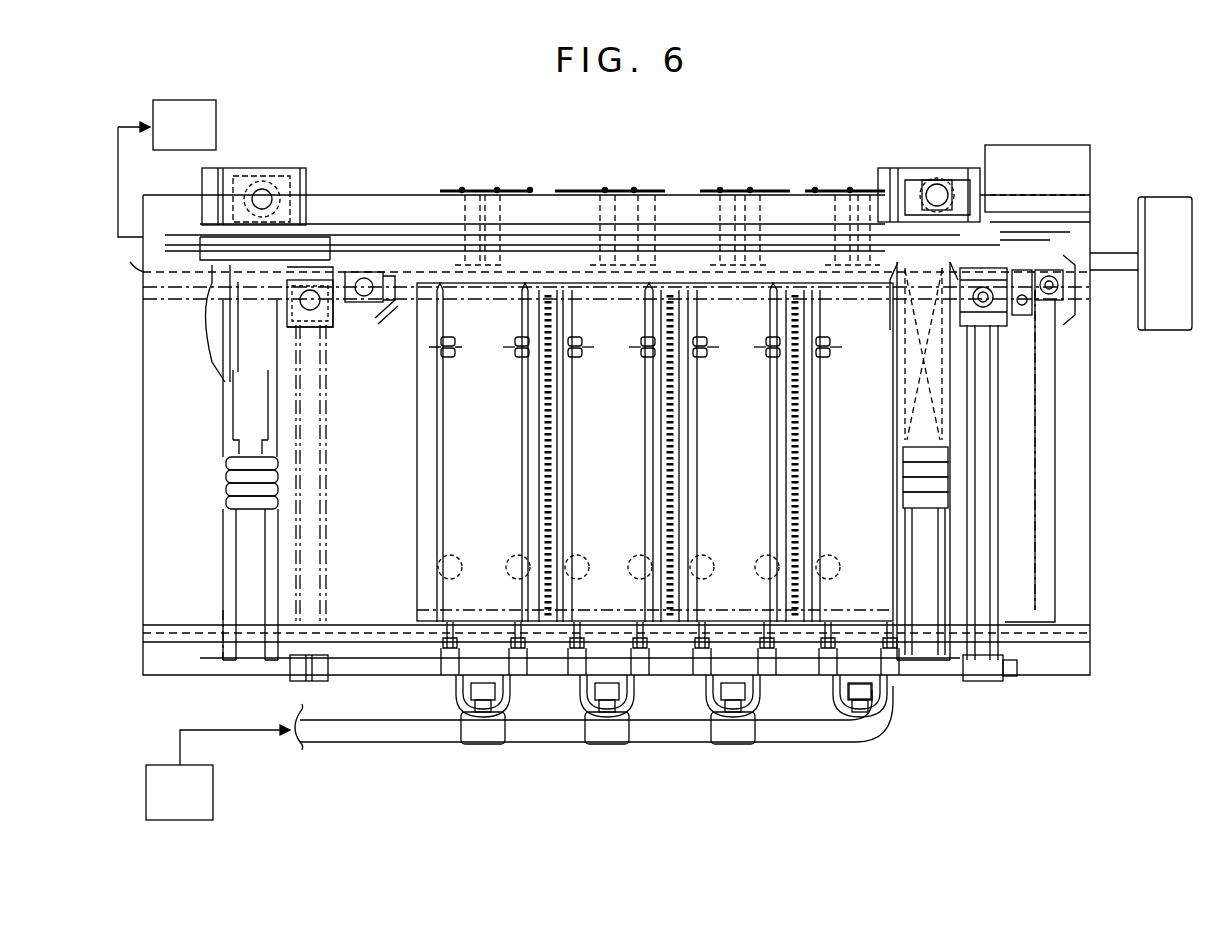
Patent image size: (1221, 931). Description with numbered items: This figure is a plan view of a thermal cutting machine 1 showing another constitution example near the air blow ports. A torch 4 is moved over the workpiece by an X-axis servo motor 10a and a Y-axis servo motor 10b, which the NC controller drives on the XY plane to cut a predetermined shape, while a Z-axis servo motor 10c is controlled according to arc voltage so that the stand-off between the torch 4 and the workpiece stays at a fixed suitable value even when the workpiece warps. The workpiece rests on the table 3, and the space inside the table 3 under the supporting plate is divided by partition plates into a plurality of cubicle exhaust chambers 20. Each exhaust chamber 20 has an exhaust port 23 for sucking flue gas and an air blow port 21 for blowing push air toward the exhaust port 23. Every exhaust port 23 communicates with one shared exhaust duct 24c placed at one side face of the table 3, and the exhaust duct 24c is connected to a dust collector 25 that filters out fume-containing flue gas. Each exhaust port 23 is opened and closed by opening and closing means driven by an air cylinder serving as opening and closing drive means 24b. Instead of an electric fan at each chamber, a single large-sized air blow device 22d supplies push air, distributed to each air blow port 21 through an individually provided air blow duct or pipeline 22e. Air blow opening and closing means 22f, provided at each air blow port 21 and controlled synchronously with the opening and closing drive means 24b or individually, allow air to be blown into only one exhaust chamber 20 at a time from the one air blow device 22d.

The thermal cutting machine 1 is at (703, 153).
The table 3 is at (705, 598).
The torch 4 is at (1040, 315).
The X-axis servo motor 10a is at (938, 195).
The Y-axis servo motor 10b is at (1012, 325).
The Z-axis servo motor 10c is at (1020, 335).
The exhaust chamber 20 is at (890, 578).
The air blow port 21 is at (815, 612).
The air blow device 22d is at (182, 822).
The pipe elbow 22e is at (868, 705).
The air blow opening and closing means 22f is at (878, 690).
The exhaust port 23 is at (820, 235).
The opening and closing drive means 24b is at (858, 192).
The exhaust duct 24c is at (678, 190).
The dust collector 25 is at (217, 127).